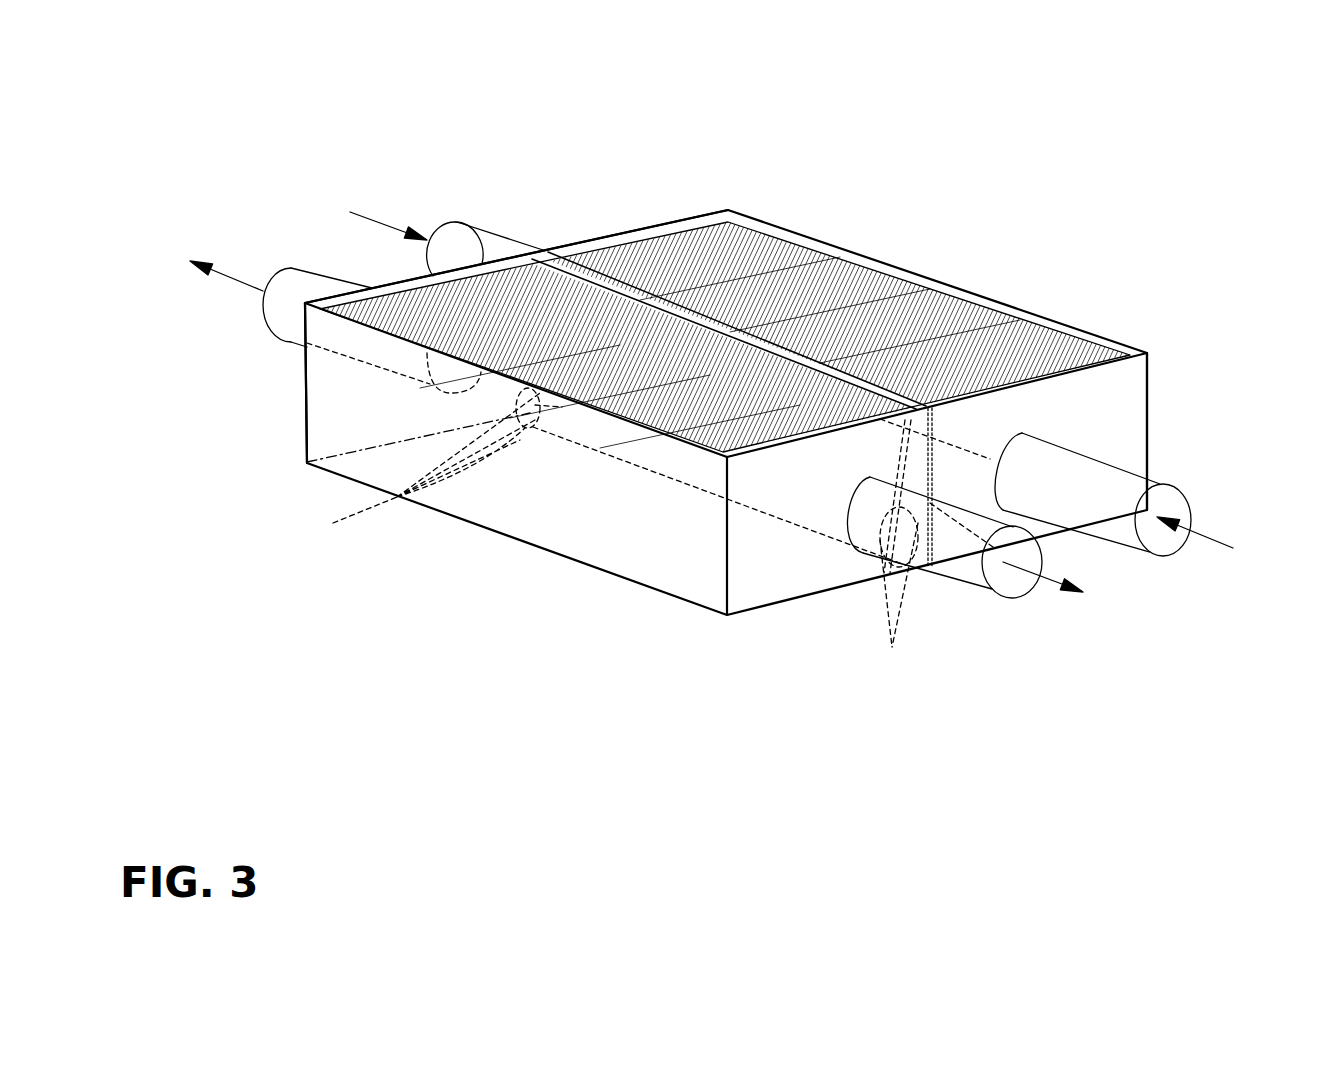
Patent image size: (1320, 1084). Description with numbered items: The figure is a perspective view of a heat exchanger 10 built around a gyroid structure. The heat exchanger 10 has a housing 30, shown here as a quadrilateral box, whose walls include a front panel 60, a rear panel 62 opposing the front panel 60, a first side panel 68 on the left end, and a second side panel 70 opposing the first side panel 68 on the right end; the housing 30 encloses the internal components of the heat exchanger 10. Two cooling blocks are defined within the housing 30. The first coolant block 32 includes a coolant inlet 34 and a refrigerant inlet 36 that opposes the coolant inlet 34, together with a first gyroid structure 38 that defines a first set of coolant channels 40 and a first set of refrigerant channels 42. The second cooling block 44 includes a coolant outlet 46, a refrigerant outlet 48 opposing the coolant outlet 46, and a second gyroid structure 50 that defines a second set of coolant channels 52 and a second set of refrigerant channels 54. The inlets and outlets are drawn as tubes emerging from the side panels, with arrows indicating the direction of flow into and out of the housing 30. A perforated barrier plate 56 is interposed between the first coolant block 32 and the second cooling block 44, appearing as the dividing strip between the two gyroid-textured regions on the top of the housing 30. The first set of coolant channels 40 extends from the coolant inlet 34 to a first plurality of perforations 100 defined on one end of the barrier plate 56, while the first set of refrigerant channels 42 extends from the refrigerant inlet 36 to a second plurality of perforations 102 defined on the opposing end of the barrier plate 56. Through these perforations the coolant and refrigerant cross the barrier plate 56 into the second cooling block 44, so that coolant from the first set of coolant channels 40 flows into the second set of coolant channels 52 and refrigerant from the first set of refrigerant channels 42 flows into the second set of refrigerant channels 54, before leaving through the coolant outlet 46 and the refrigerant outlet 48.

The heat exchanger 10 is at (824, 155).
The housing 30 is at (450, 517).
The first coolant block 32 is at (1067, 342).
The coolant inlet 34 is at (473, 240).
The refrigerant inlet 36 is at (1113, 477).
The first gyroid structure 38 is at (830, 268).
The first set of coolant channels 40 is at (880, 300).
The first set of refrigerant channels 42 is at (1040, 323).
The second cooling block 44 is at (577, 397).
The coolant outlet 46 is at (300, 277).
The refrigerant outlet 48 is at (973, 575).
The second gyroid structure 50 is at (650, 425).
The second set of coolant channels 52 is at (680, 440).
The second set of refrigerant channels 54 is at (757, 448).
The perforated barrier plate 56 is at (557, 257).
The front panel 60 is at (380, 285).
The rear panel 62 is at (1107, 405).
The first side panel 68 is at (333, 405).
The second side panel 70 is at (975, 300).
The first plurality of perforations 100 is at (887, 592).
The second plurality of perforations 102 is at (585, 476).